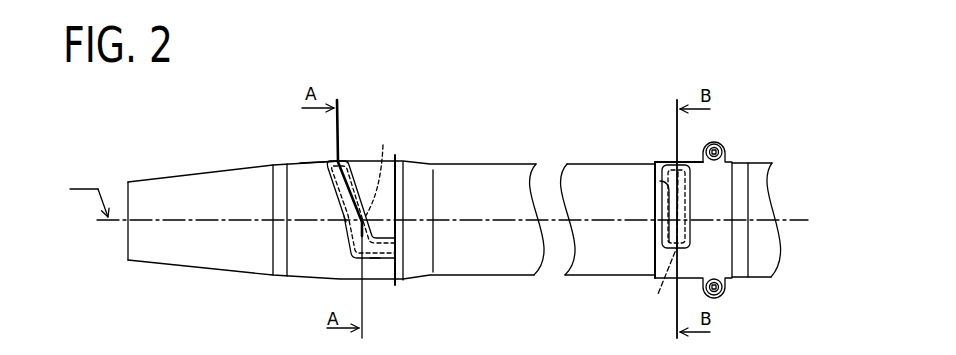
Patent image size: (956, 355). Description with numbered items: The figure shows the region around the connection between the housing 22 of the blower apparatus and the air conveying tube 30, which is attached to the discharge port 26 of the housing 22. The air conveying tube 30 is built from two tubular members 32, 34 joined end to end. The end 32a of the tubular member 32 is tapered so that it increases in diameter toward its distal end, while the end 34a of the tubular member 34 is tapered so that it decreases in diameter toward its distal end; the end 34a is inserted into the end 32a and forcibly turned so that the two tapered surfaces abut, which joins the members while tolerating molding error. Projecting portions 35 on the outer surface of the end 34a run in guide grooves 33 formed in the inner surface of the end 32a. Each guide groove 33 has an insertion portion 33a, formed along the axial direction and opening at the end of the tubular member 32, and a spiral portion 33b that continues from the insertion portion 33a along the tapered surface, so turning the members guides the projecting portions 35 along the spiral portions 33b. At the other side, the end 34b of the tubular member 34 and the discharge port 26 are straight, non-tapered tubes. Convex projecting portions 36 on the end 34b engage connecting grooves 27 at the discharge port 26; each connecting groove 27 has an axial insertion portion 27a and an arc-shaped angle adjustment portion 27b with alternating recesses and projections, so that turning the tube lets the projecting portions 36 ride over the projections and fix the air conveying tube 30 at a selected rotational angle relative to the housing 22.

The housing 22 is at (769, 126).
The discharge port 26 is at (740, 278).
The connecting groove 27 is at (601, 128).
The insertion portion 27a is at (657, 162).
The angle adjustment portion 27b is at (665, 205).
The air conveying tube 30 is at (191, 120).
The tubular member 32 is at (168, 264).
The end of tubular member 32a is at (329, 161).
The guide groove 33 is at (270, 316).
The insertion portion 33a is at (373, 261).
The spiral portion 33b is at (343, 216).
The tubular member 34 is at (482, 277).
The end of tubular member 34a is at (398, 285).
The end of air conveying tube 34b is at (652, 279).
The projecting portion 35 is at (378, 170).
The projecting portion 36 is at (662, 244).